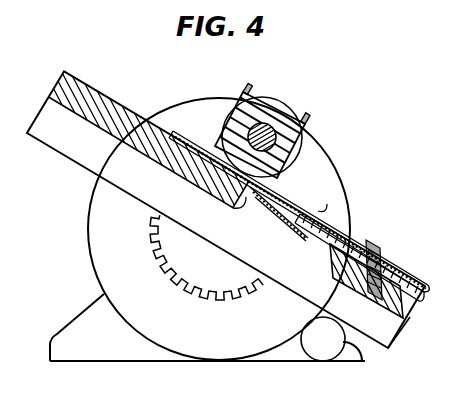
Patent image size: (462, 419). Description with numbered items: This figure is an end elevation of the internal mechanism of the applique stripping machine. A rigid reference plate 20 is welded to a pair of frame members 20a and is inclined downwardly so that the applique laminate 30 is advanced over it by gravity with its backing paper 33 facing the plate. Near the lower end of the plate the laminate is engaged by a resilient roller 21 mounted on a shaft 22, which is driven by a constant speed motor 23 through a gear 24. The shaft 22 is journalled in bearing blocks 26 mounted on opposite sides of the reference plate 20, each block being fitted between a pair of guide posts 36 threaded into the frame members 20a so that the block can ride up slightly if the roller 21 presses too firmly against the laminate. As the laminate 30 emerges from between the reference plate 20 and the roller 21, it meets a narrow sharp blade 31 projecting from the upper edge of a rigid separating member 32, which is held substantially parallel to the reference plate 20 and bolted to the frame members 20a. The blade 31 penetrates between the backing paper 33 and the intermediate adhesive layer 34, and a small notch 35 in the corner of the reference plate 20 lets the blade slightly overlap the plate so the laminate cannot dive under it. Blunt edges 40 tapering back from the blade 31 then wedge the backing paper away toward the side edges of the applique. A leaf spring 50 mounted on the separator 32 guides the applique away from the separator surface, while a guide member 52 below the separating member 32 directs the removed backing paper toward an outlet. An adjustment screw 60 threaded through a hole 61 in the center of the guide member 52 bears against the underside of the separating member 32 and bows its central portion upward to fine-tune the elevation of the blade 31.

The reference plate 20 is at (78, 86).
The frame members 20a is at (58, 141).
The roller 21 is at (285, 104).
The shaft 22 is at (305, 147).
The motor 23 is at (233, 345).
The gear 24 is at (220, 300).
The bearing blocks 26 is at (250, 102).
The applique laminate 30 is at (181, 122).
The blade 31 is at (253, 186).
The separating member 32 is at (363, 242).
The backing paper 33 is at (303, 232).
The adhesive layer 34 is at (323, 212).
The notch 35 is at (238, 203).
The guide posts 36 is at (245, 89).
The blunt edges 40 is at (308, 238).
The leaf spring 50 is at (413, 275).
The guide member 52 is at (408, 304).
The adjustment screw 60 is at (398, 318).
The hole 61 is at (365, 292).